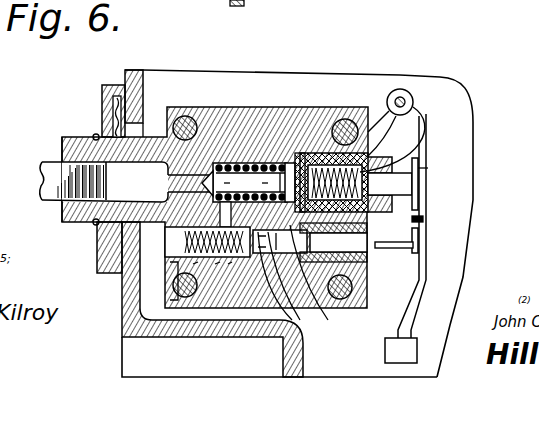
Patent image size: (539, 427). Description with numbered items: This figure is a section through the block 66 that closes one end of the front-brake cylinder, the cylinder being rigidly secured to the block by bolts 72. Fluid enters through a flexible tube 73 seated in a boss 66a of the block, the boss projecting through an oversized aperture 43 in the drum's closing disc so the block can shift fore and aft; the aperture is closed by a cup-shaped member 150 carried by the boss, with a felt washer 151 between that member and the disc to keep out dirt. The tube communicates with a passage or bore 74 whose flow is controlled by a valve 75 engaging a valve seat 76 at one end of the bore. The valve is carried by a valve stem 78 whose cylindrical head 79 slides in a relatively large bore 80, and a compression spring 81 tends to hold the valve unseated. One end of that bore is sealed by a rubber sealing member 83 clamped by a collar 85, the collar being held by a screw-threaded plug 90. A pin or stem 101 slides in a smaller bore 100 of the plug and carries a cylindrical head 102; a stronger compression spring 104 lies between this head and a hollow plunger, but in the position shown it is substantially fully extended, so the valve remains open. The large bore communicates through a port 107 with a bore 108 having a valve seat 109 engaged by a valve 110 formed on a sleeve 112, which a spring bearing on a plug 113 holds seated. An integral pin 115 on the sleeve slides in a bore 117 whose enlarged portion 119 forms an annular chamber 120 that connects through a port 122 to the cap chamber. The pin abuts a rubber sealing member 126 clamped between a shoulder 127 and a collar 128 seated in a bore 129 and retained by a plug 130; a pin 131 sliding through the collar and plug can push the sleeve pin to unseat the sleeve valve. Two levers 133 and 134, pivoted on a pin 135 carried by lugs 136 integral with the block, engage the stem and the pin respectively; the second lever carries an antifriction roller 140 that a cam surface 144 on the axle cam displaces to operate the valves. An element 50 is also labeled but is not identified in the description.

The aperture 43 is at (145, 121).
The element 50 is at (266, 8).
The block 66 is at (210, 108).
The boss 66a is at (62, 212).
The bolts 72 is at (185, 115).
The flexible tube 73 is at (48, 166).
The passage or bore 74 is at (173, 182).
The valve 75 is at (235, 183).
The valve seat 76 is at (170, 196).
The valve stem 78 is at (238, 164).
The cylindrical head 79 is at (290, 160).
The bore 80 is at (252, 164).
The compression spring 81 is at (268, 166).
The sealing member 83 is at (294, 163).
The collar 85 is at (332, 115).
The plug 90 is at (418, 152).
The smaller bore 100 is at (387, 195).
The pin or stem 101 is at (403, 182).
The cylindrical head 102 is at (356, 160).
The compression spring 104 is at (360, 140).
The port 107 is at (168, 296).
The bore 108 is at (217, 264).
The valve seat 109 is at (248, 264).
The valve 110 is at (229, 264).
The sleeve 112 is at (196, 264).
The plug 113 is at (122, 276).
The pin 115 is at (262, 264).
The bore 117 is at (324, 332).
The enlarged portion 119 is at (279, 230).
The annular chamber 120 is at (318, 318).
The port 122 is at (178, 245).
The sealing member 126 is at (310, 226).
The shoulder 127 is at (281, 241).
The collar 128 is at (363, 270).
The bore 129 is at (350, 216).
The plug 130 is at (420, 240).
The pin 131 is at (397, 248).
The lever 133 is at (430, 168).
The lever 134 is at (426, 285).
The pin 135 is at (414, 101).
The lugs 136 is at (380, 107).
The antifriction roller 140 is at (410, 348).
The cam surface 144 is at (171, 282).
The cup-shaped member 150 is at (102, 87).
The washer 151 is at (113, 104).